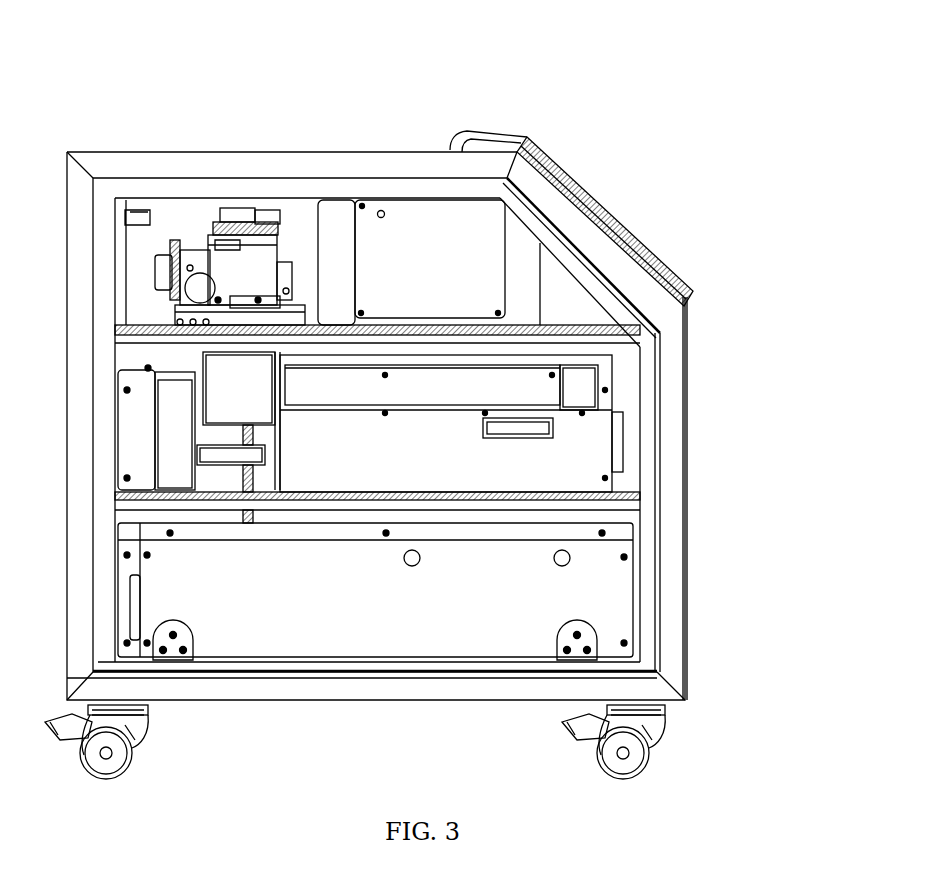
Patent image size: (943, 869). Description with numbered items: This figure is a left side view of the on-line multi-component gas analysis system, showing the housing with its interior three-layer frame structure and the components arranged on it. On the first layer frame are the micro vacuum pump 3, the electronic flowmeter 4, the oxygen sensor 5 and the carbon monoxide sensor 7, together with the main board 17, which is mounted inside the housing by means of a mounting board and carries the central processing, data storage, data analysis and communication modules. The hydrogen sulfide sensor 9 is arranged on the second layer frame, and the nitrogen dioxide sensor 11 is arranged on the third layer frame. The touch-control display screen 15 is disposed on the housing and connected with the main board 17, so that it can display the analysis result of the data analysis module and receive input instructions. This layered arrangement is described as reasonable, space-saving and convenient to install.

The micro vacuum pump 3 is at (200, 288).
The electronic flowmeter 4 is at (258, 300).
The oxygen sensor 5 is at (381, 210).
The carbon monoxide sensor 7 is at (262, 213).
The hydrogen sulfide sensor 9 is at (557, 460).
The nitrogen dioxide sensor 11 is at (612, 612).
The touch-control display screen 15 is at (678, 282).
The main board 17 is at (447, 220).